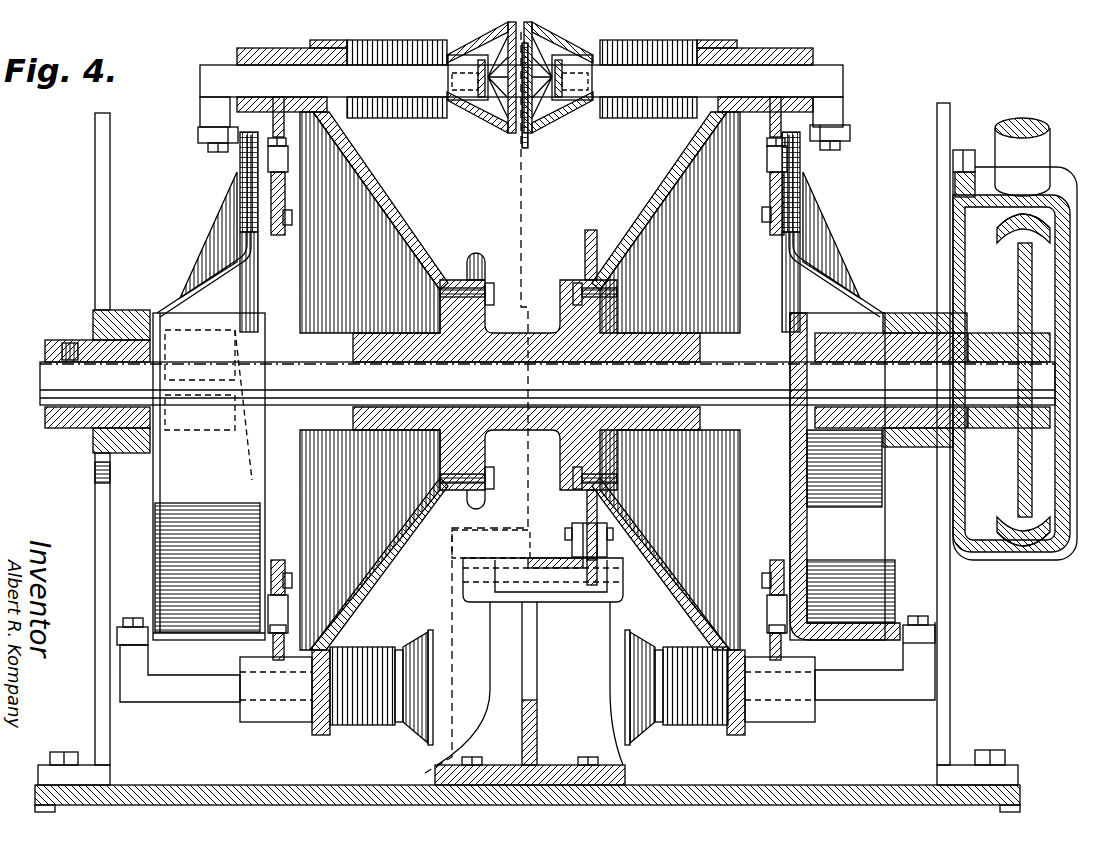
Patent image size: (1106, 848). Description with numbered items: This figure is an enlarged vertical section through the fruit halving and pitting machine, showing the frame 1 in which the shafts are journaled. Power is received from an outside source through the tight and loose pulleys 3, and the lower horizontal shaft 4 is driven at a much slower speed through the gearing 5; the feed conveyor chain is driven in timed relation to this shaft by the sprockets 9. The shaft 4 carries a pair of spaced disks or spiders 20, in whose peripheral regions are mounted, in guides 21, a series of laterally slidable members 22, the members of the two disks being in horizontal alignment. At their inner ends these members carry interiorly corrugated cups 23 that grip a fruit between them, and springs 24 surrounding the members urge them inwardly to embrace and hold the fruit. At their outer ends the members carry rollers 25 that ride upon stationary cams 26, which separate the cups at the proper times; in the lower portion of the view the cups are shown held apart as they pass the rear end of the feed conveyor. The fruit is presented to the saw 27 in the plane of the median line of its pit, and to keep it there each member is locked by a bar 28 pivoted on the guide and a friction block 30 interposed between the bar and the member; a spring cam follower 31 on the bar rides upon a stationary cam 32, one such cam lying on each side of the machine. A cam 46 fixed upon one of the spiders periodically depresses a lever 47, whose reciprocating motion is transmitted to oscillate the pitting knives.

The frame 1 is at (100, 507).
The tight and loose pulleys 3 is at (470, 400).
The lower horizontal shaft 4 is at (547, 383).
The gearing 5 is at (990, 265).
The sprockets 9 is at (478, 268).
The disks or spiders 20 is at (395, 215).
The guides 21 is at (292, 46).
The laterally slidable members 22 is at (527, 383).
The interiorly corrugated cups 23 is at (500, 122).
The springs 24 is at (415, 118).
The rollers 25 is at (205, 135).
The stationary cams 26 is at (162, 310).
The saw 27 is at (527, 140).
The bar 28 is at (272, 120).
The friction block 30 is at (280, 96).
The spring cam follower 31 is at (527, 389).
The stationary cam 32 is at (280, 176).
The cam 46 is at (585, 238).
The lever 47 is at (600, 574).